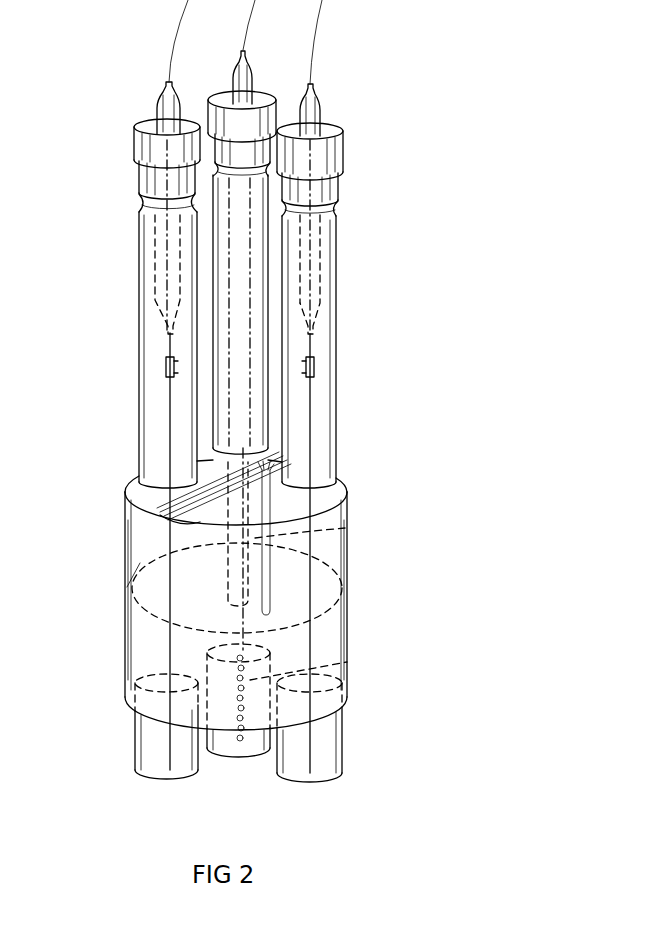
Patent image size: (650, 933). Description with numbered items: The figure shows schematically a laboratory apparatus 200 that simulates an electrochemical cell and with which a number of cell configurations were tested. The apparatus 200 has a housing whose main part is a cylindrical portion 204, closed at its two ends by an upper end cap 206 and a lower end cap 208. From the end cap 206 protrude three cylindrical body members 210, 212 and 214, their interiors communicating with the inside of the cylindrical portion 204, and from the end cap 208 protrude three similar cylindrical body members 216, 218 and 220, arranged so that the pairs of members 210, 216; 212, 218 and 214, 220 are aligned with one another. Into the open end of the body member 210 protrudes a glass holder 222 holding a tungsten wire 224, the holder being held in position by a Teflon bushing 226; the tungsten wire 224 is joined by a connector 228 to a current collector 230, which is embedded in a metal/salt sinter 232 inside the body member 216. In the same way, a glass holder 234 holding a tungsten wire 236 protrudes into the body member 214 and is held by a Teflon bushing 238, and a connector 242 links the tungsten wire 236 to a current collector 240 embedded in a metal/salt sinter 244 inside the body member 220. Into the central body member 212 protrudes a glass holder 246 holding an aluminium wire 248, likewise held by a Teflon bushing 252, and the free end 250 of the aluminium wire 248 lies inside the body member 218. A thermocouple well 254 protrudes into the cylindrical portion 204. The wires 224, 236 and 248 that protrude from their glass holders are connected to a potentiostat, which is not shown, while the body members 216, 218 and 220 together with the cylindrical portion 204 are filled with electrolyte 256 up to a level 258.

The laboratory apparatus 200 is at (500, 146).
The cylindrical portion 204 is at (333, 512).
The end cap 206 is at (165, 521).
The end cap 208 is at (150, 736).
The cylindrical body member 210 is at (152, 346).
The cylindrical body member 212 is at (258, 293).
The cylindrical body member 214 is at (327, 334).
The cylindrical body member 216 is at (148, 752).
The cylindrical body member 218 is at (225, 745).
The cylindrical body member 220 is at (345, 770).
The glass holder 222 is at (158, 280).
The tungsten wire 224 is at (158, 255).
The Teflon bushing 226 is at (135, 142).
The connector 228 is at (166, 368).
The current collector 230 is at (170, 578).
The metal/salt sinter 232 is at (157, 765).
The glass holder 234 is at (322, 228).
The tungsten wire 236 is at (320, 347).
The Teflon bushing 238 is at (340, 154).
The current collector 240 is at (342, 568).
The connector 242 is at (315, 362).
The metal/salt sinter 244 is at (340, 748).
The glass holder 246 is at (150, 206).
The aluminium wire 248 is at (235, 214).
The free end 250 is at (347, 662).
The Teflon bushing 252 is at (263, 102).
The thermocouple well 254 is at (340, 530).
The electrolyte 256 is at (145, 632).
The level 258 is at (165, 555).